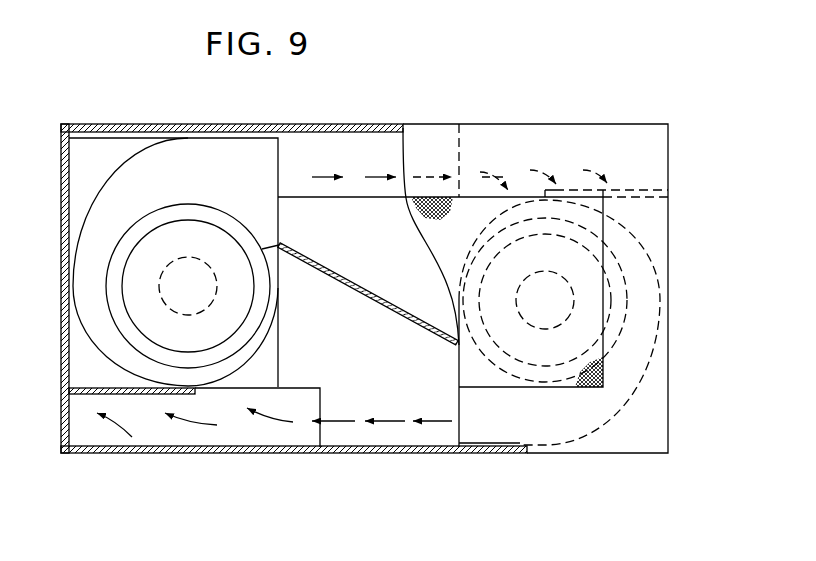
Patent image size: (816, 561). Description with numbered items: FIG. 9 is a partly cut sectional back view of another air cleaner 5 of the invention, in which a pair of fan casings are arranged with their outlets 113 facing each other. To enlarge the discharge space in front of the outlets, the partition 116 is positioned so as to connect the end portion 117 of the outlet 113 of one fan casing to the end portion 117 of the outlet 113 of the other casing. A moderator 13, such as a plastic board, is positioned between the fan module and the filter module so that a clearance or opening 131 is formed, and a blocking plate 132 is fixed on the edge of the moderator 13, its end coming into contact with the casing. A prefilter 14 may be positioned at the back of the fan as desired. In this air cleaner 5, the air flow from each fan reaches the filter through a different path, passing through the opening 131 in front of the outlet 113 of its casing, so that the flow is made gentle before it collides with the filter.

The air cleaner 5 is at (578, 124).
The outlet 113 is at (280, 167).
The end portion 117 is at (340, 210).
The moderator 13 is at (352, 197).
The partition 116 is at (360, 288).
The clearance (opening) 131 is at (636, 134).
The blocking plate 132 is at (655, 190).
The prefilter 14 is at (603, 370).